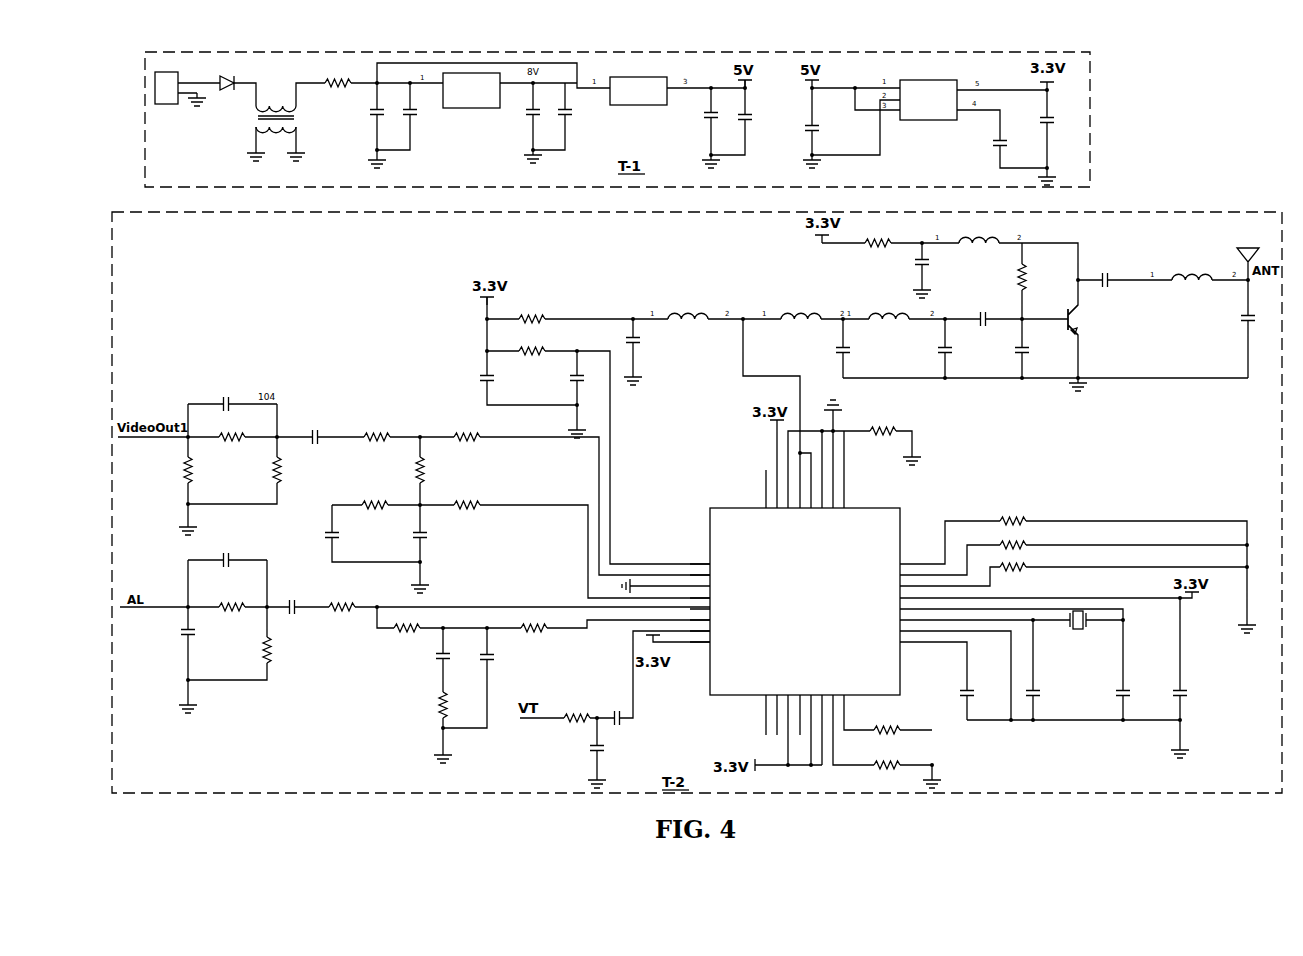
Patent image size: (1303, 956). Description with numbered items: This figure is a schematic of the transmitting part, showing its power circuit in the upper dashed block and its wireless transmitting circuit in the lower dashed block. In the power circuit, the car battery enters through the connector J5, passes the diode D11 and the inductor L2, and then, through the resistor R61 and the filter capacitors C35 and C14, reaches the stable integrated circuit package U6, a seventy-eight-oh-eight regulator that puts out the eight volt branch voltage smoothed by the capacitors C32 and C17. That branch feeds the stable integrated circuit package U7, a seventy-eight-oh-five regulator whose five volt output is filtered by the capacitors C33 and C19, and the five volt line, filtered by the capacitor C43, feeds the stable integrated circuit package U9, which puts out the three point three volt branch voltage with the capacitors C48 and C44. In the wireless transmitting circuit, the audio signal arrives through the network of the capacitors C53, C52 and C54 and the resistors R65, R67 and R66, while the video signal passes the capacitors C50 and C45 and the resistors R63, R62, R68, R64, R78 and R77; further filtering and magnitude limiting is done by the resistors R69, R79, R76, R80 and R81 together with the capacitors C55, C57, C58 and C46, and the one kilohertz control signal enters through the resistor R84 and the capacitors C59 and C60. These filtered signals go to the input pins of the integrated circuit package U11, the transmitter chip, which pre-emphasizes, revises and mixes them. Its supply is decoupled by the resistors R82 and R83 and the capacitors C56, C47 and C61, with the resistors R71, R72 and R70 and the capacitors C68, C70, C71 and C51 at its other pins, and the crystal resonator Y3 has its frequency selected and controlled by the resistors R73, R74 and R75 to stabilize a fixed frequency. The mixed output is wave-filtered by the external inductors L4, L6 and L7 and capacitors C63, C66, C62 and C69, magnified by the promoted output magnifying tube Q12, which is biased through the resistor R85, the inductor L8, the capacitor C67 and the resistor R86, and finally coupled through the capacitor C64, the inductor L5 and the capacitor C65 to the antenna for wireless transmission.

The power input connector J5 is at (166, 78).
The diode D11 is at (227, 71).
The transformer/inductor L2 is at (289, 118).
The resistor R61 is at (334, 72).
The capacitor C35 is at (362, 105).
The capacitor C14 is at (425, 121).
The stable integrated circuit package U6 is at (471, 89).
The capacitor C32 is at (520, 106).
The capacitor C17 is at (583, 112).
The stable integrated circuit package U7 is at (638, 91).
The capacitor C33 is at (695, 108).
The capacitor C19 is at (762, 118).
The capacitor C43 is at (828, 129).
The stable integrated circuit package U9 is at (934, 100).
The capacitor C48 is at (1015, 144).
The capacitor C44 is at (1063, 120).
The resistor R85 is at (878, 234).
The inductor L8 is at (979, 231).
The capacitor C67 is at (939, 263).
The resistor R86 is at (1039, 277).
The promoted output magnifying tube Q12 is at (1059, 314).
The capacitor C64 is at (1107, 272).
The inductor L5 is at (1192, 267).
The capacitor C65 is at (1230, 318).
The inductor L4 is at (688, 306).
The inductor L6 is at (801, 307).
The inductor L7 is at (889, 307).
The capacitor C63 is at (988, 313).
The capacitor C66 is at (861, 351).
The capacitor C62 is at (963, 351).
The capacitor C69 is at (1040, 351).
The capacitor C61 is at (650, 341).
The resistor R82 is at (532, 310).
The resistor R83 is at (532, 342).
The capacitor C56 is at (503, 379).
The capacitor C47 is at (593, 379).
The capacitor C50 is at (225, 397).
The resistor R63 is at (233, 429).
The resistor R62 is at (207, 470).
The resistor R68 is at (295, 470).
The capacitor C45 is at (312, 427).
The resistor R64 is at (375, 427).
The resistor R78 is at (465, 429).
The resistor R77 is at (437, 470).
The resistor R69 is at (375, 496).
The resistor R79 is at (467, 496).
The capacitor C55 is at (347, 536).
The capacitor C57 is at (436, 536).
The capacitor C53 is at (227, 551).
The resistor R65 is at (232, 597).
The capacitor C52 is at (204, 633).
The resistor R67 is at (285, 650).
The capacitor C54 is at (292, 599).
The resistor R66 is at (343, 597).
The resistor R76 is at (408, 640).
The resistor R80 is at (542, 640).
The capacitor C58 is at (457, 651).
The resistor R81 is at (461, 705).
The capacitor C46 is at (503, 659).
The resistor R84 is at (577, 708).
The capacitor C59 is at (615, 710).
The capacitor C60 is at (613, 750).
The resistor R71 is at (879, 422).
The resistor R72 is at (885, 721).
The resistor R70 is at (881, 756).
The resistor R73 is at (1012, 513).
The resistor R74 is at (1026, 539).
The resistor R75 is at (1012, 578).
The crystal resonator Y3 is at (1077, 634).
The capacitor C68 is at (983, 694).
The capacitor C70 is at (1050, 694).
The capacitor C71 is at (1139, 694).
The capacitor C51 is at (1197, 694).
The integrated circuit package U11 is at (804, 604).